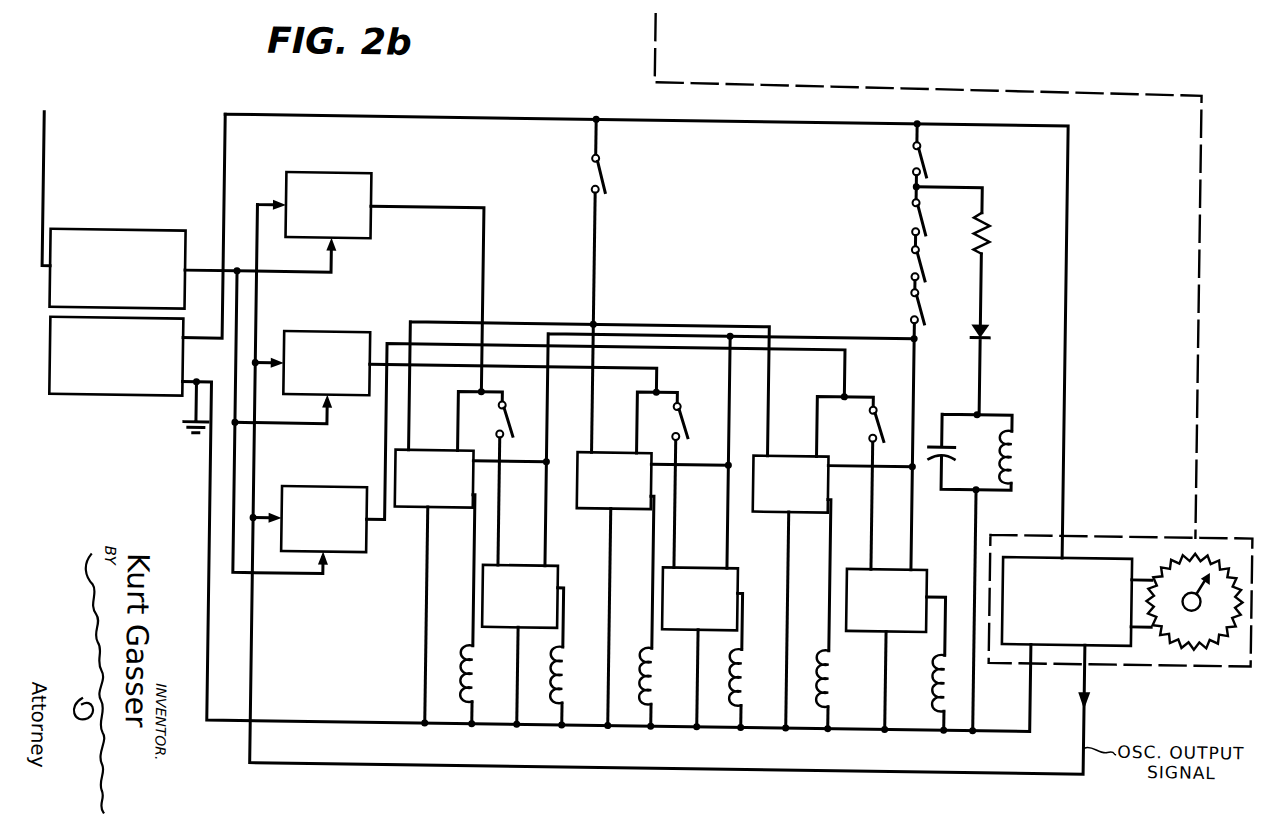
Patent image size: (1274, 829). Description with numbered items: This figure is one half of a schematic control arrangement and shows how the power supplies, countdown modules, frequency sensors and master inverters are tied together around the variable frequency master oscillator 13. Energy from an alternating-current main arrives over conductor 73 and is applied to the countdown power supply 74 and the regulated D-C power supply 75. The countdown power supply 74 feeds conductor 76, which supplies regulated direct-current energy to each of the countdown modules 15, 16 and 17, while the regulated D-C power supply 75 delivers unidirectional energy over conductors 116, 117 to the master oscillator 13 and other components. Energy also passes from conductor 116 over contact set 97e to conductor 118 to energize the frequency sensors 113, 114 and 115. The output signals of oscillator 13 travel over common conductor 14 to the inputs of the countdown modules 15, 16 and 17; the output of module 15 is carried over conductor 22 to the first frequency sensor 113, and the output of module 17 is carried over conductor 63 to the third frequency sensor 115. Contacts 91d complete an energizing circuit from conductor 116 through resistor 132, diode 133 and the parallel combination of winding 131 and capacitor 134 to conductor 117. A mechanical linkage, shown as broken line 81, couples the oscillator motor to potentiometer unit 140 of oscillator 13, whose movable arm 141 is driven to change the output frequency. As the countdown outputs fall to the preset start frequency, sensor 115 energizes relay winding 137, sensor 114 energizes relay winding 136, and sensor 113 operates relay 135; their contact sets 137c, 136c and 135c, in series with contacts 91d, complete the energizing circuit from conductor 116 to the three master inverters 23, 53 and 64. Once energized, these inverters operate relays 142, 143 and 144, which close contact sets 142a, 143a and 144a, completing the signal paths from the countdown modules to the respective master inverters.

The conductor 73 is at (41, 176).
The countdown power supply 74 is at (156, 236).
The regulated D-C power supply 75 is at (116, 402).
The conductor 76 is at (216, 276).
The conductor 116 is at (684, 121).
The conductor 117 is at (218, 388).
The countdown module 15 is at (313, 180).
The countdown module 16 is at (315, 340).
The countdown module 17 is at (317, 494).
The common conductor 14 is at (677, 770).
The conductor 22 is at (456, 209).
The conductor 63 is at (386, 524).
The conductor 118 is at (519, 311).
The contact set 97e is at (597, 181).
The contact set 142a is at (510, 412).
The contact set 143a is at (683, 405).
The contact set 144a is at (879, 402).
The contact set 91d is at (921, 157).
The contact set 135c is at (907, 215).
The contact set 136c is at (907, 260).
The contact set 137c is at (907, 301).
The resistor 132 is at (998, 238).
The diode 133 is at (985, 329).
The capacitor 134 is at (949, 449).
The winding 131 is at (1025, 453).
The frequency sensor 113 is at (427, 440).
The frequency sensor 114 is at (615, 457).
The frequency sensor 115 is at (790, 454).
The master inverter 23 is at (538, 567).
The master inverter 53 is at (721, 567).
The master inverter 64 is at (886, 639).
The relay 135 is at (470, 675).
The relay winding 142 is at (574, 679).
The relay winding 136 is at (662, 680).
The relay winding 143 is at (752, 681).
The relay winding 137 is at (844, 679).
The relay winding 144 is at (940, 686).
The mechanical linkage 81 is at (645, 31).
The variable frequency master oscillator 13 is at (1168, 664).
The potentiometer unit 140 is at (1238, 648).
The movable arm 141 is at (1206, 566).